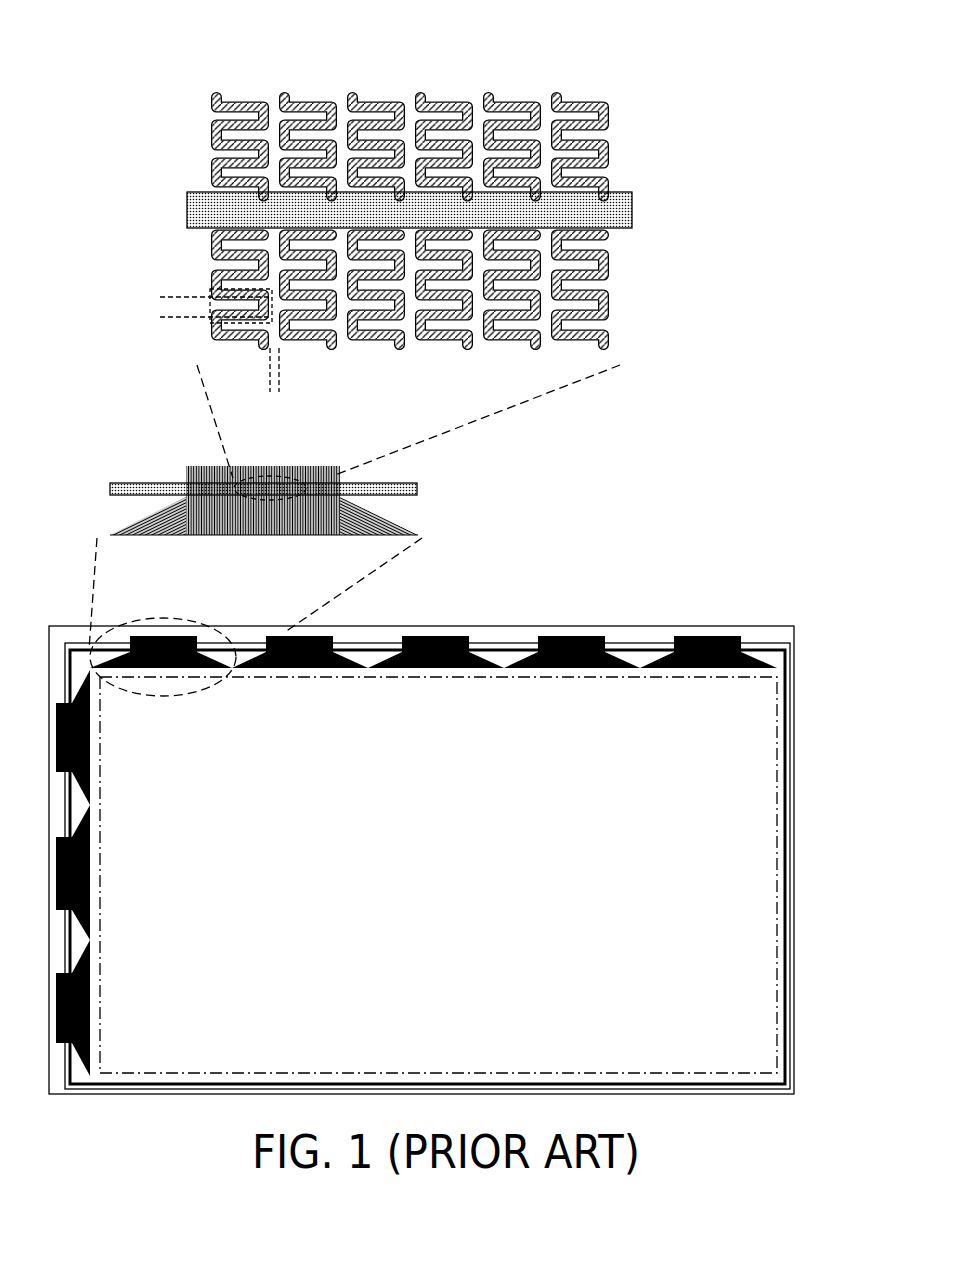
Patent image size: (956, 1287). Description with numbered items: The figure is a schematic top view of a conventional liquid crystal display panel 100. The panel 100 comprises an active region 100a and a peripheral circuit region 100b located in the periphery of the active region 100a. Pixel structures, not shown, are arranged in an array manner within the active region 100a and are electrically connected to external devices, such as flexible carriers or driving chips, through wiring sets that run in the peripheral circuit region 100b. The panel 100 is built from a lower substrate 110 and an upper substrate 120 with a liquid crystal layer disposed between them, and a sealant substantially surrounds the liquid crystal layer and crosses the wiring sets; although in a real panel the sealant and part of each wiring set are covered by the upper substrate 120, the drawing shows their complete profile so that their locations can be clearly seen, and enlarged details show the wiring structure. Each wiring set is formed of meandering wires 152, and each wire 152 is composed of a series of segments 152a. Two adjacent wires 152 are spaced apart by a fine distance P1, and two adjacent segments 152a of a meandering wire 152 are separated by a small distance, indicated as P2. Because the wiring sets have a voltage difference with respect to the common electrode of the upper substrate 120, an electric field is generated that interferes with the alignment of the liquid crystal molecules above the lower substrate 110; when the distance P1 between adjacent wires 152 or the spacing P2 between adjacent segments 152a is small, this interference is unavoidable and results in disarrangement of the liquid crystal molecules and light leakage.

The liquid crystal display panel 100 is at (447, 851).
The active region 100a is at (712, 850).
The peripheral circuit region 100b is at (780, 662).
The lower substrate 110 is at (722, 628).
The upper substrate 120 is at (776, 643).
The wire 152 is at (246, 84).
The segment 152a is at (225, 270).
The distance between two adjacent wires P1 is at (237, 378).
The pitch of electrode line segments P2 is at (183, 272).